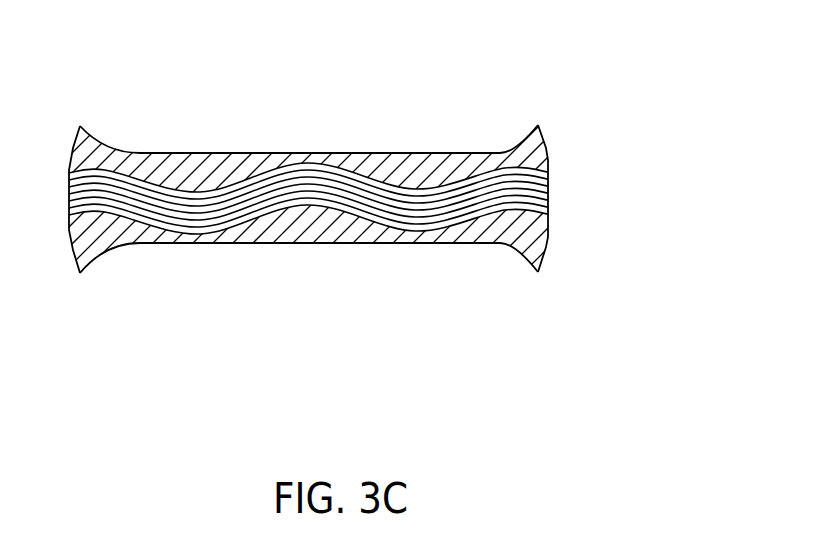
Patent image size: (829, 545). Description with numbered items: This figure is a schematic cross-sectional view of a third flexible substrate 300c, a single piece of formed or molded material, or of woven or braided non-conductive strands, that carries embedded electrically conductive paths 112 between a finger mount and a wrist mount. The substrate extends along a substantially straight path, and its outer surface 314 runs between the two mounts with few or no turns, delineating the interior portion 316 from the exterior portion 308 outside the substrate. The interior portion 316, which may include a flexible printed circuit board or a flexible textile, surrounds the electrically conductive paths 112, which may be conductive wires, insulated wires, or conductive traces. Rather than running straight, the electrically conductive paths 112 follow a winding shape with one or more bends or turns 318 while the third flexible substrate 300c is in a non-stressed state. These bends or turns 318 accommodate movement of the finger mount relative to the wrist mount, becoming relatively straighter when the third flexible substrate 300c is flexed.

The third flexible substrate 300c is at (369, 188).
The exterior portion 308 is at (318, 222).
The outer surface 314 is at (251, 153).
The interior portion 316 is at (308, 204).
The bends or turns 318 is at (287, 270).
The electrically conductive paths 112 is at (383, 213).